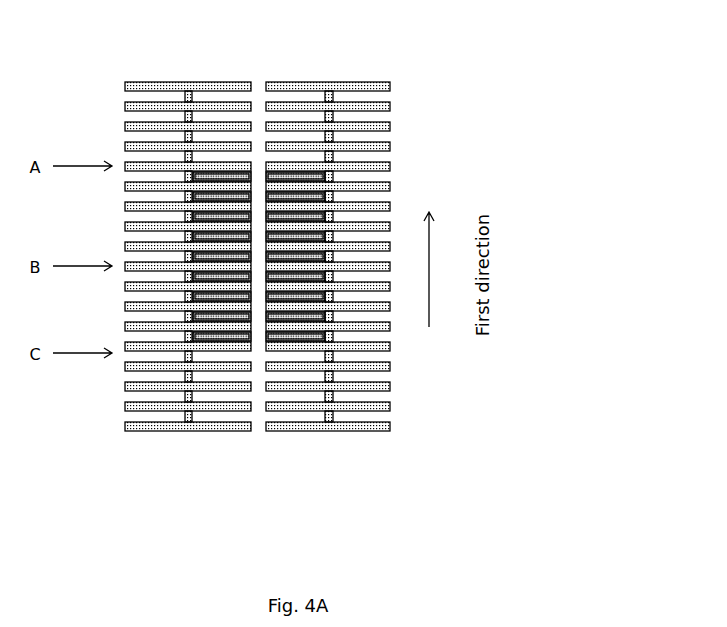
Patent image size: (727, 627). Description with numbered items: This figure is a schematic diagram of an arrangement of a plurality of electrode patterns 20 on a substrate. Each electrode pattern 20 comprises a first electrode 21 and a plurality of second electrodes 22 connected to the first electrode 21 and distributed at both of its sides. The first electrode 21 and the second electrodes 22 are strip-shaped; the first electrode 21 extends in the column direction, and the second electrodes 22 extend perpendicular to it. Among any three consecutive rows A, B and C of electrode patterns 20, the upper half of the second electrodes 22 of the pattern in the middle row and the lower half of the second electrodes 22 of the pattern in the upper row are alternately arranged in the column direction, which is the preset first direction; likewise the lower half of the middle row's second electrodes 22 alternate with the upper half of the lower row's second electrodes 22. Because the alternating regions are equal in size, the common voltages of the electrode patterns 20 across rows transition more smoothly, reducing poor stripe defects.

The electrode pattern 20 is at (286, 254).
The first electrode 21 is at (333, 118).
The second electrode 22 is at (388, 82).